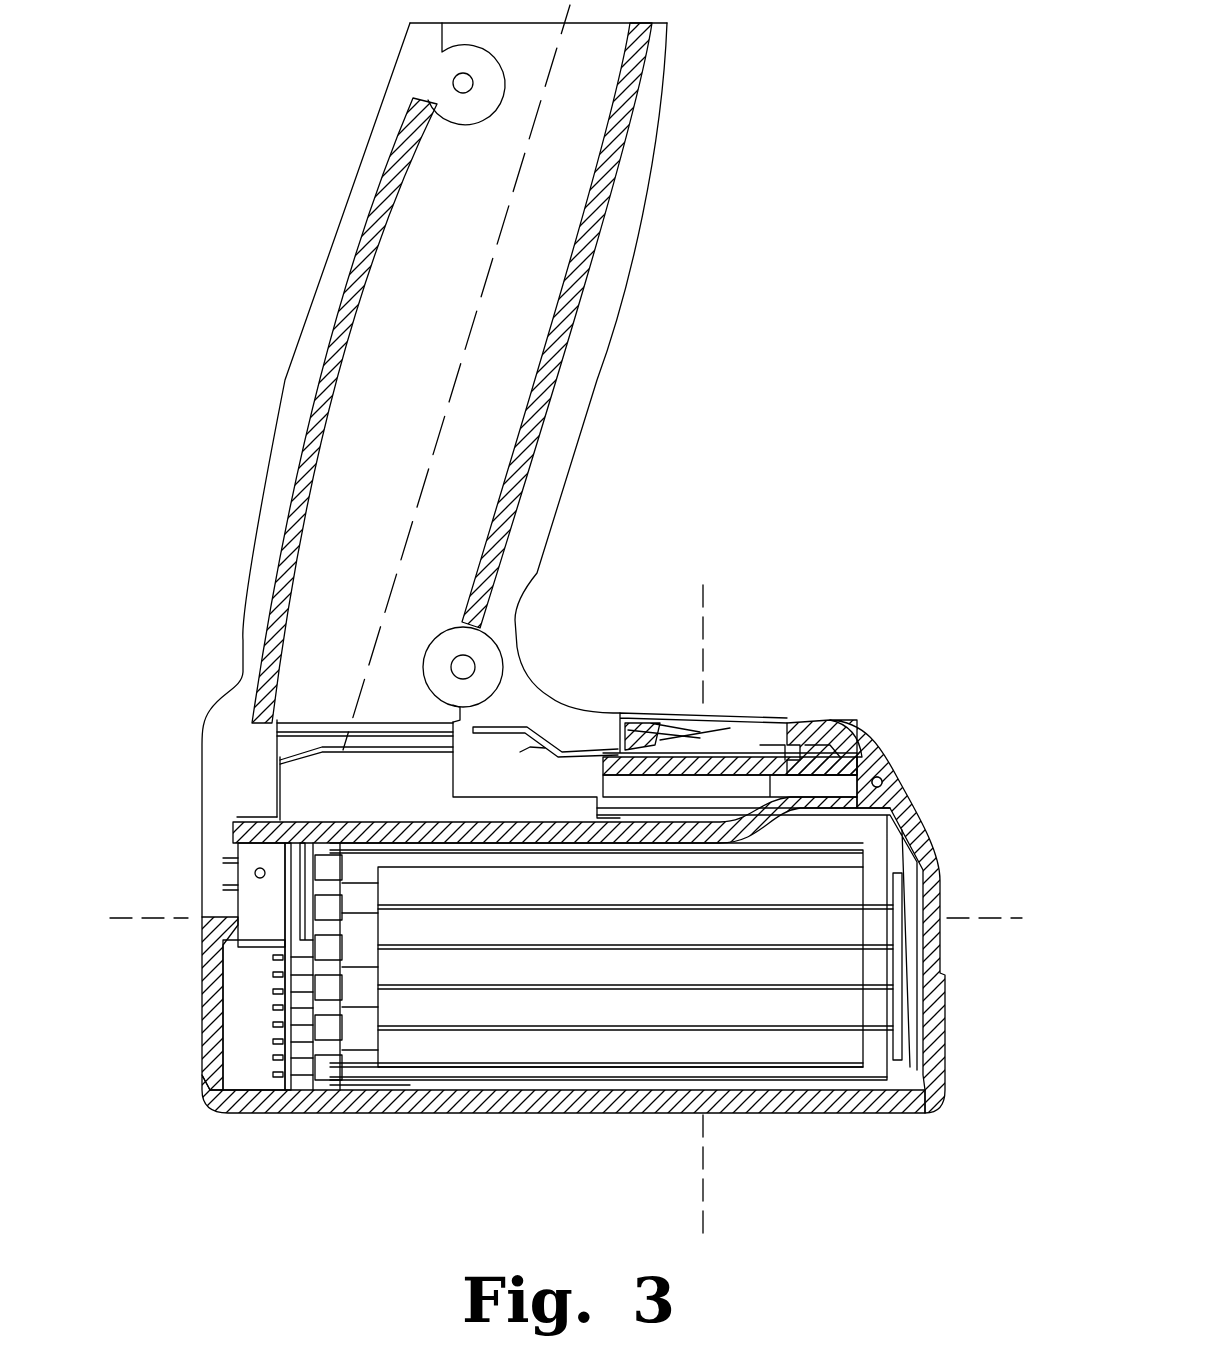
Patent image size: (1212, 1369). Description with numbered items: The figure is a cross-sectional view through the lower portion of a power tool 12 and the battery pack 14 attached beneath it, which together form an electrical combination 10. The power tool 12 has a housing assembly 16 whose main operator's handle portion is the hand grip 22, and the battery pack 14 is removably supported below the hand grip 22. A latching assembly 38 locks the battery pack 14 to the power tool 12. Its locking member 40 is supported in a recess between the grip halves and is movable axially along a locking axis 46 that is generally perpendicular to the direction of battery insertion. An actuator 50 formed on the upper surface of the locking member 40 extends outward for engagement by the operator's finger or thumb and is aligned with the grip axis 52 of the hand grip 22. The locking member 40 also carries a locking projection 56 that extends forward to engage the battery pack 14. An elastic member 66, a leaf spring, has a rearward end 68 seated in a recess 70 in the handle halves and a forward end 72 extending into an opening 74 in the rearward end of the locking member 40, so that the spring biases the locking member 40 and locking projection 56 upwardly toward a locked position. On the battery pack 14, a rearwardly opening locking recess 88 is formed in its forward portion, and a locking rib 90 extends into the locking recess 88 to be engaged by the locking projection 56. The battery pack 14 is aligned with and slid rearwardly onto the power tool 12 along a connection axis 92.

The electrical combination 10 is at (885, 168).
The power tool 12 is at (352, 190).
The battery pack 14 is at (955, 827).
The housing assembly 16 is at (407, 40).
The hand grip 22 is at (652, 178).
The latching assembly 38 is at (779, 700).
The locking member 40 is at (787, 720).
The locking axis 46 is at (706, 622).
The actuator 50 is at (648, 735).
The grip axis 52 is at (490, 268).
The locking projection 56 is at (857, 755).
The elastic member 66 is at (560, 745).
The rearward end 68 is at (465, 730).
The recess 70 is at (540, 748).
The forward end 72 is at (700, 737).
The opening 74 is at (770, 740).
The locking recess 88 is at (843, 743).
The locking rib 90 is at (883, 779).
The connection axis 92 is at (147, 918).